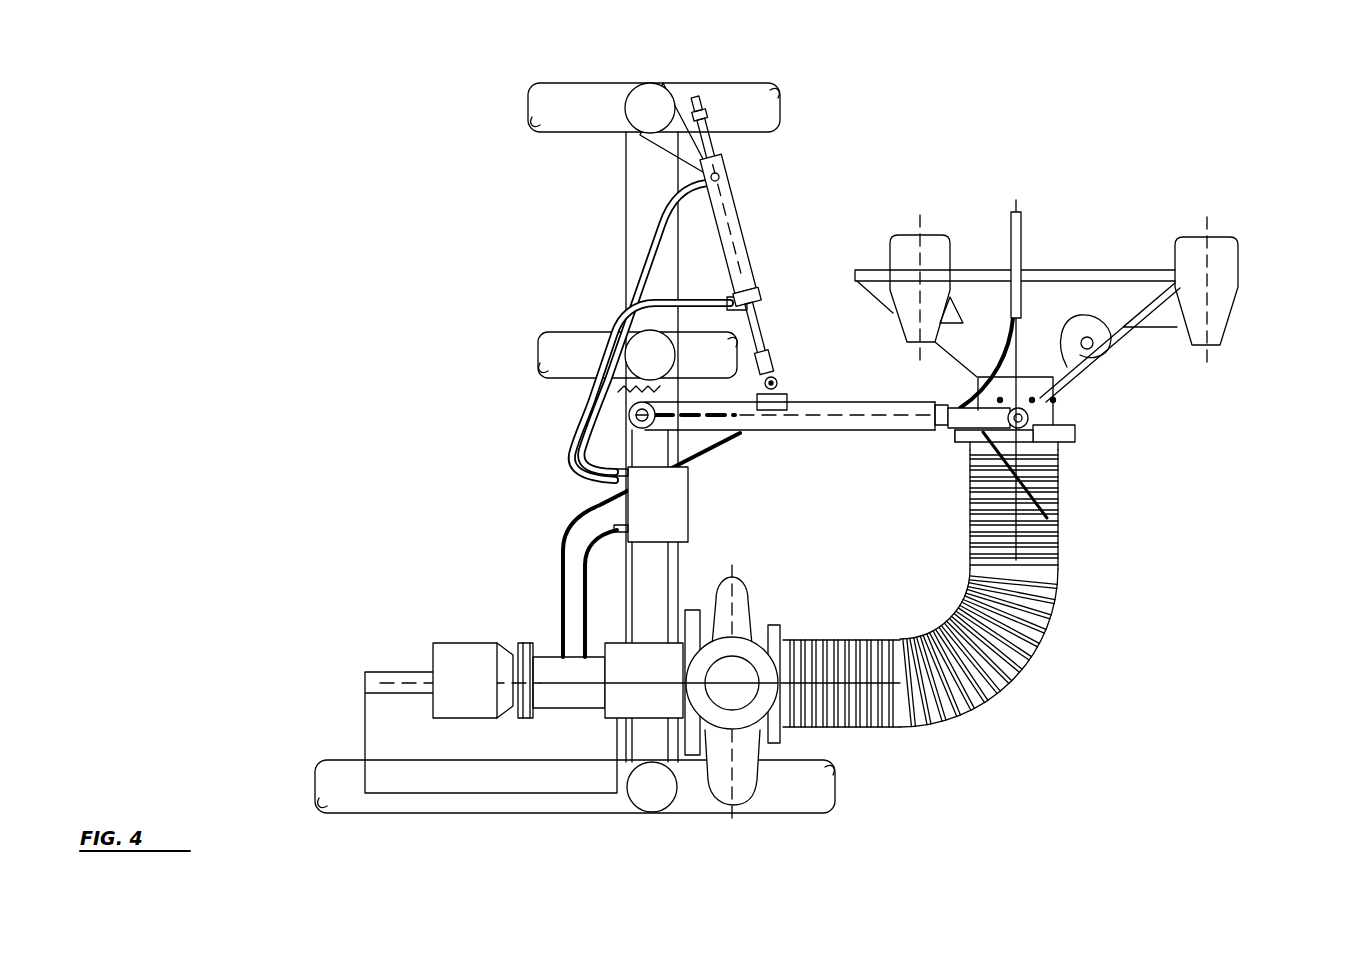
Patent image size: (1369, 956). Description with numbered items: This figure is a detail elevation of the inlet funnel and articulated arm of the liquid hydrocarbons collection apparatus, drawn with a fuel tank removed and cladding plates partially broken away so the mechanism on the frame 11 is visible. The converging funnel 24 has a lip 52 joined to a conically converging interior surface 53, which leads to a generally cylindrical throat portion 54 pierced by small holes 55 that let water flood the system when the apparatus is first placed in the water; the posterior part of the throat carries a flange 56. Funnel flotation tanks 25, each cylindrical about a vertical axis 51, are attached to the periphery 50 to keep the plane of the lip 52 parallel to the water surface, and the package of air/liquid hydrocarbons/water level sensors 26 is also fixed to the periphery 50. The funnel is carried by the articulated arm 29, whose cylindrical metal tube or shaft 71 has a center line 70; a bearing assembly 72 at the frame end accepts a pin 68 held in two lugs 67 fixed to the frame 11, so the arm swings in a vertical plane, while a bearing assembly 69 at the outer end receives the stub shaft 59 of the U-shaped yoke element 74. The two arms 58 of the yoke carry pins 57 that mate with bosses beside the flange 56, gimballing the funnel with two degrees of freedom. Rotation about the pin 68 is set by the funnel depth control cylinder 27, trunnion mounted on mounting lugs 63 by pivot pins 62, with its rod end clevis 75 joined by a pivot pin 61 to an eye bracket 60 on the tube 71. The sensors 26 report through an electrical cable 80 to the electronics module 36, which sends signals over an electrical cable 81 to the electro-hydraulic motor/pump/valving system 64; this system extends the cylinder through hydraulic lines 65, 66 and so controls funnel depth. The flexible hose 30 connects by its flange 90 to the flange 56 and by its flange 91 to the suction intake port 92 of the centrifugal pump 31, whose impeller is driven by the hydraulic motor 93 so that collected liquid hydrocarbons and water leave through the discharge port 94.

The frame 11 is at (614, 82).
The converging funnel 24 is at (1088, 372).
The funnel flotation tanks 25 is at (1086, 256).
The air/liquid hydrocarbons/water level sensors 26 is at (1022, 225).
The funnel depth control cylinder 27 is at (752, 233).
The articulated arm 29 is at (790, 436).
The flexible hose 30 is at (968, 588).
The centrifugal pump 31 is at (775, 645).
The electronics module 36 is at (395, 672).
The periphery 50 is at (1235, 280).
The vertical axis 51 is at (1208, 222).
The funnel lip 52 is at (1105, 268).
The conically converging interior surface 53 is at (1108, 332).
The throat portion 54 is at (1062, 415).
The small holes 55 is at (1060, 398).
The flange 56 is at (1058, 427).
The pin 57 is at (1045, 443).
The arms 58 is at (947, 436).
The stub shaft 59 is at (940, 436).
The eye bracket 60 is at (788, 395).
The pivot pin 61 is at (780, 390).
The pivot pins 62 is at (720, 178).
The mounting lugs 63 is at (663, 157).
The electro-hydraulic motor/pump/valving system 64 is at (690, 508).
The hydraulic line 65 is at (648, 238).
The hydraulic line 66 is at (665, 293).
The lugs 67 is at (613, 387).
The pin 68 is at (618, 434).
The bearing assembly 69 is at (917, 436).
The center line 70 is at (848, 410).
The cylindrical metal tube or shaft 71 is at (780, 434).
The bearing assembly 72 is at (628, 417).
The U-shaped yoke element 74 is at (1050, 515).
The rod end clevis 75 is at (776, 384).
The electrical cable 80 is at (578, 537).
The electrical cable 81 is at (572, 582).
The flange 90 is at (1060, 436).
The flange 91 is at (785, 640).
The suction intake port 92 is at (770, 622).
The hydraulic motor 93 is at (450, 643).
The discharge port 94 is at (718, 802).